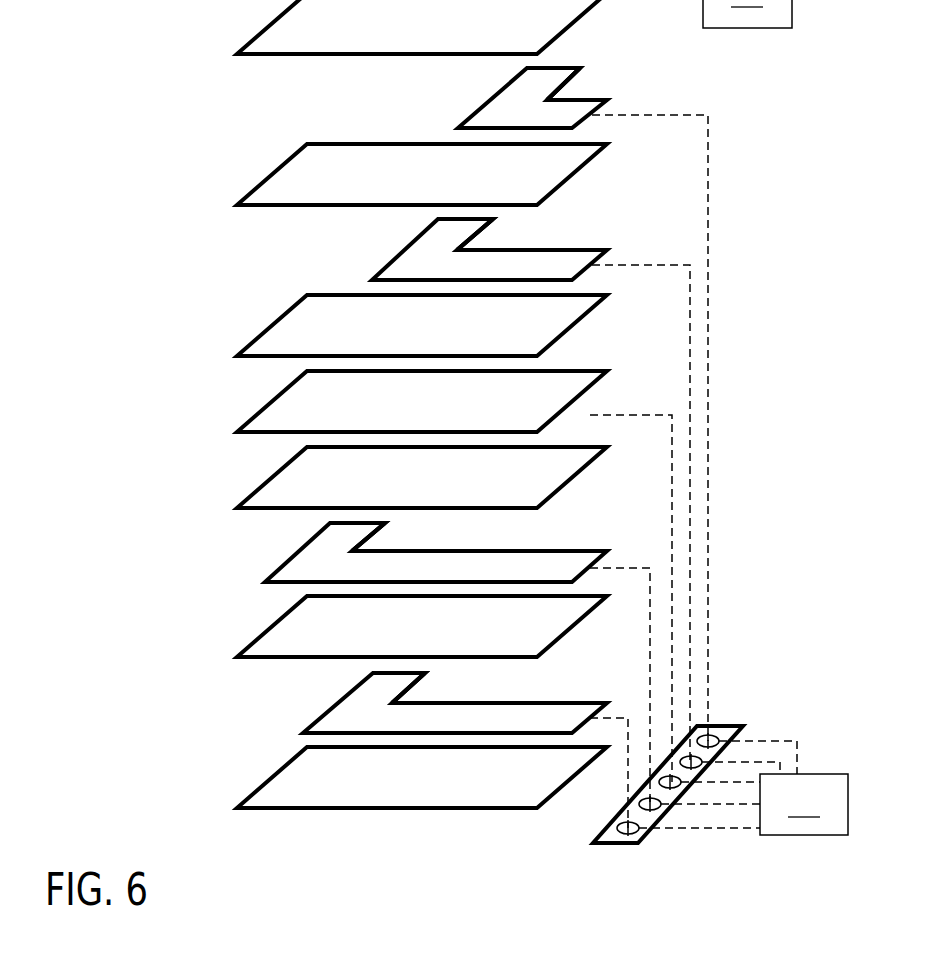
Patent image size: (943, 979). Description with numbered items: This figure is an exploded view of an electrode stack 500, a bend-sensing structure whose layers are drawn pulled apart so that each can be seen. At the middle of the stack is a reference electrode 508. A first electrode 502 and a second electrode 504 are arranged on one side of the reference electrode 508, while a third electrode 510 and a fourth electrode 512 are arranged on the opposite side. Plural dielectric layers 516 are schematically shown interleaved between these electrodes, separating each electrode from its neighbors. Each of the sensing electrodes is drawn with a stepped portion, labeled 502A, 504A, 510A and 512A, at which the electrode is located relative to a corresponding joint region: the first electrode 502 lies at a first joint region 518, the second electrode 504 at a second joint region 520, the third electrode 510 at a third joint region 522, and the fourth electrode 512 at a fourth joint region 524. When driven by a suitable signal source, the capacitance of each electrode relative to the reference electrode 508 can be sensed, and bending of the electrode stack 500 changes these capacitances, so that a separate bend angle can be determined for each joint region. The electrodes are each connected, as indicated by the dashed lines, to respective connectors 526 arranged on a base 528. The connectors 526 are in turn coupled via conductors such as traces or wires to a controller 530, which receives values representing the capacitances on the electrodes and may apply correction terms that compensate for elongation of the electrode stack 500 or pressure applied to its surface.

The electrode stack 500 is at (76, 414).
The first electrode 502 is at (458, 128).
The slot of first conductive layer 502A is at (537, 87).
The second electrode 504 is at (372, 280).
The slot of second conductive layer 504A is at (450, 238).
The reference electrode 508 is at (237, 432).
The third electrode 510 is at (265, 582).
The slot of third conductive layer 510A is at (348, 540).
The fourth electrode 512 is at (303, 733).
The slot of fourth conductive layer 512A is at (381, 693).
The dielectric layers 516 is at (237, 54).
The first joint region 518 is at (587, 82).
The second joint region 520 is at (509, 229).
The third joint region 522 is at (388, 531).
The fourth joint region 524 is at (432, 681).
The connector 526 is at (618, 818).
The base 528 is at (613, 845).
The controller 530 is at (743, 417).